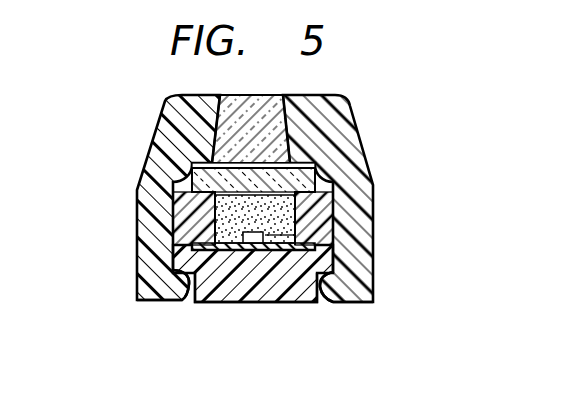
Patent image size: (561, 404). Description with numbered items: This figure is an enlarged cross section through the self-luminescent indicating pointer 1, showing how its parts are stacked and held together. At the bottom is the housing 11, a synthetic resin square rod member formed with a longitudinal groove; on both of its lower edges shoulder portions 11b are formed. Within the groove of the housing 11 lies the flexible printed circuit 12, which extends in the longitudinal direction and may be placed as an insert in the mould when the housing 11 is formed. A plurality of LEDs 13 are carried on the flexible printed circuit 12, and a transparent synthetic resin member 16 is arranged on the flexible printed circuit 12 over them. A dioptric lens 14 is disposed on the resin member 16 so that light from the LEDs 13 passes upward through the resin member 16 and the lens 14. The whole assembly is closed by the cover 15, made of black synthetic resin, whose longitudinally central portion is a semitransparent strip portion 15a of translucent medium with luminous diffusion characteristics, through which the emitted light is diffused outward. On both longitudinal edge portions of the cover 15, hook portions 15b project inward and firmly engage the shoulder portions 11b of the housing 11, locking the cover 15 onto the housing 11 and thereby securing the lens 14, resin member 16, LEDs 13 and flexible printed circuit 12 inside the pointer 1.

The self-luminescent indicating pointer 1 is at (362, 93).
The housing 11 is at (298, 303).
The shoulder portions 11b is at (364, 303).
The flexible printed circuit 12 is at (197, 249).
The LEDs 13 is at (303, 248).
The dioptric lens 14 is at (186, 187).
The cover 15 is at (178, 131).
The semitransparent strip portion 15a is at (238, 103).
The hook portions 15b is at (176, 278).
The transparent synthetic resin member 16 is at (289, 201).